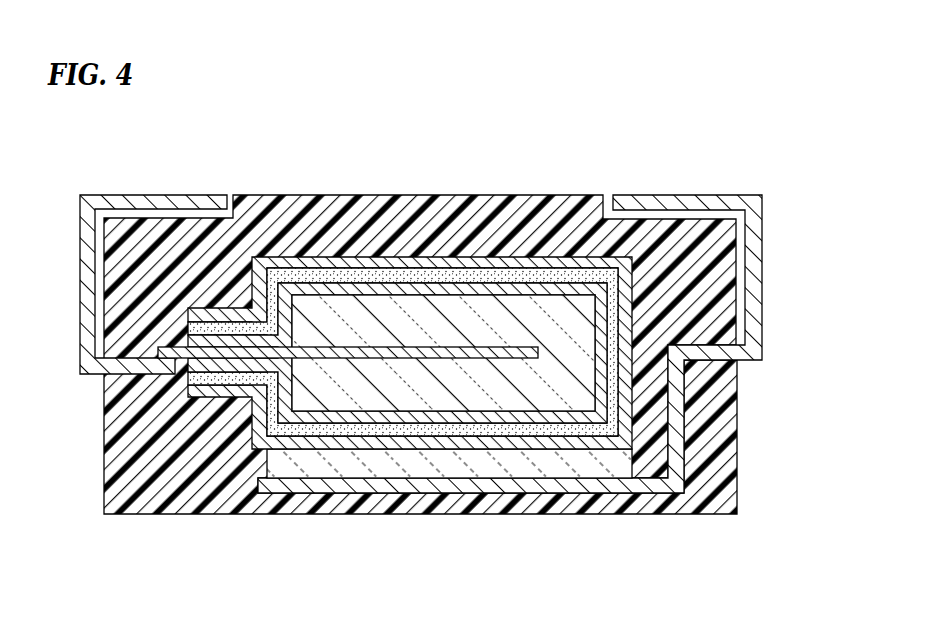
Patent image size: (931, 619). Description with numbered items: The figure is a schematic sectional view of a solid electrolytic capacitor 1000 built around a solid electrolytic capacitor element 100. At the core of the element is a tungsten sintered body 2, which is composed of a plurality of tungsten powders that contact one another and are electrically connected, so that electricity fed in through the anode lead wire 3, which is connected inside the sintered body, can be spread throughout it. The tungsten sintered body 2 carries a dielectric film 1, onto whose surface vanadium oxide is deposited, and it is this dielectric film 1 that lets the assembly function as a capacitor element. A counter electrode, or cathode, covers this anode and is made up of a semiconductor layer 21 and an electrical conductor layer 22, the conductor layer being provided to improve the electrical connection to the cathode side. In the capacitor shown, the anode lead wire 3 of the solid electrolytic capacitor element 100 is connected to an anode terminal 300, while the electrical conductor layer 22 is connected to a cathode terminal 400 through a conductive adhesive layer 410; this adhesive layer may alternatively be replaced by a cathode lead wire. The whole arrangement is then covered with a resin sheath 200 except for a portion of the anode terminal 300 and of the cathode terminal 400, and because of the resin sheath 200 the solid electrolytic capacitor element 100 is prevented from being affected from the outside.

The solid electrolytic capacitor 1000 is at (684, 146).
The solid electrolytic capacitor element 100 is at (534, 246).
The resin sheath 200 is at (201, 488).
The anode terminal 300 is at (130, 371).
The cathode terminal 400 is at (603, 486).
The conductive adhesive layer 410 is at (513, 468).
The dielectric film 1 is at (288, 292).
The tungsten sintered body 2 is at (452, 384).
The anode lead wire 3 is at (373, 356).
The semiconductor layer 21 is at (427, 278).
The electrical conductor layer 22 is at (471, 262).